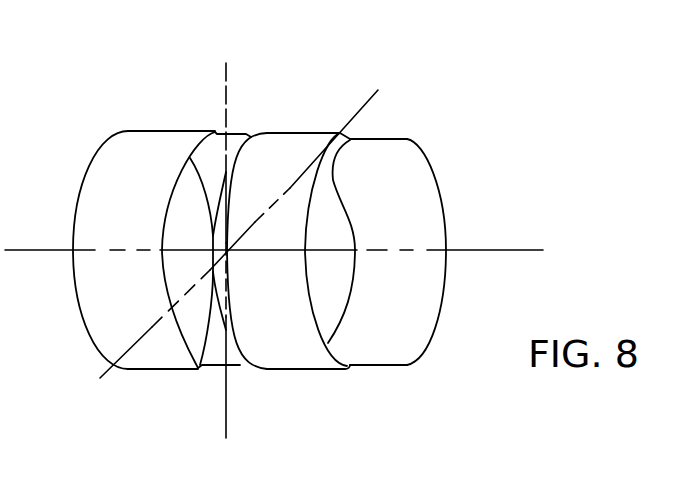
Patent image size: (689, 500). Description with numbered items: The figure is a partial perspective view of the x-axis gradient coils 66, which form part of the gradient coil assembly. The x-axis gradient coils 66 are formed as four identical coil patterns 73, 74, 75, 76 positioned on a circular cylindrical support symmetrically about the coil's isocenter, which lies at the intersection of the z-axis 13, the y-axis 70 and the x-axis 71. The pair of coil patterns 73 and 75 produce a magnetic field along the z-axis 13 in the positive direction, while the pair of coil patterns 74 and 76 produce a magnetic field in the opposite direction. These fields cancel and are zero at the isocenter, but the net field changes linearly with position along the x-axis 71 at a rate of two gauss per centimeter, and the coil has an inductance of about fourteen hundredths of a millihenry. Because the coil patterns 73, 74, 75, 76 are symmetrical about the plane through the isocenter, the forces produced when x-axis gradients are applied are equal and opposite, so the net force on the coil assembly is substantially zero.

The z-axis 13 is at (477, 250).
The x-axis gradient coils 66 is at (268, 267).
The y-axis 70 is at (228, 431).
The x-axis 71 is at (362, 113).
The coil pattern 73 is at (278, 327).
The coil pattern 74 is at (408, 293).
The coil pattern 75 is at (123, 308).
The coil pattern 76 is at (223, 167).